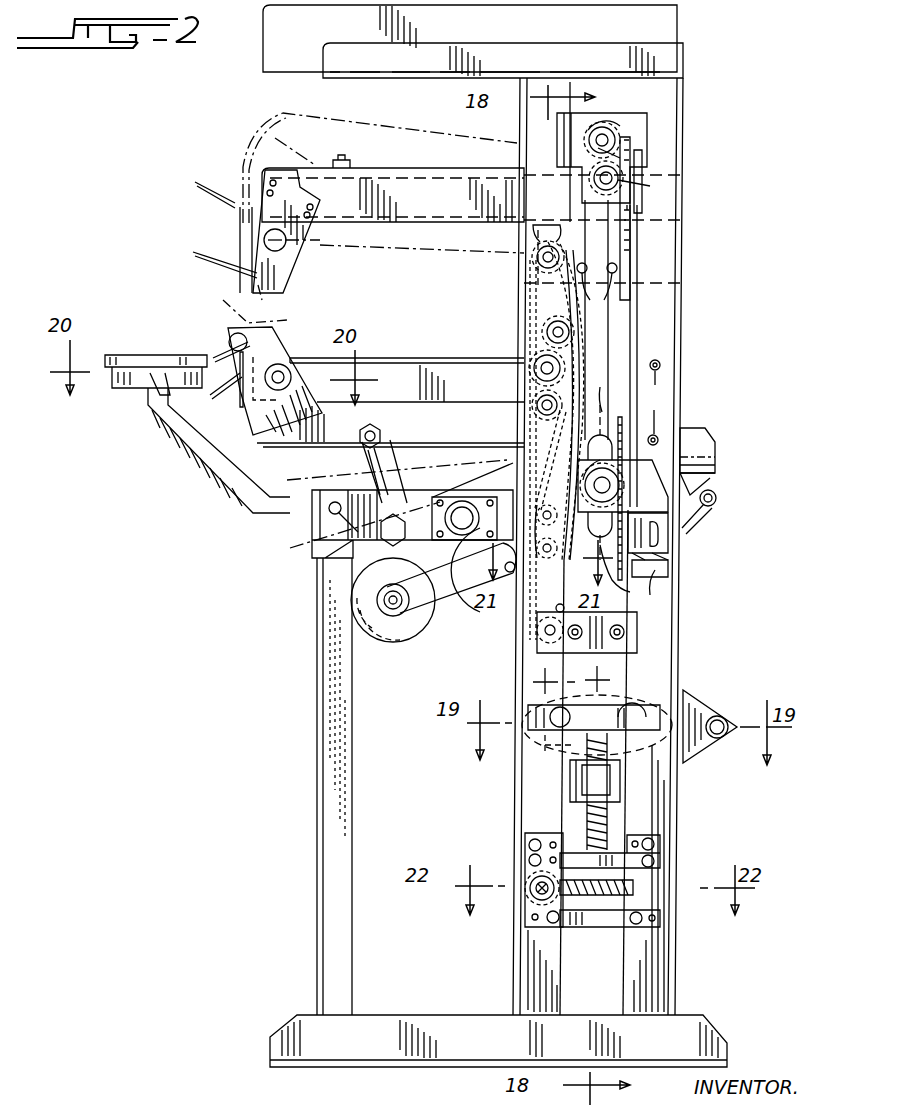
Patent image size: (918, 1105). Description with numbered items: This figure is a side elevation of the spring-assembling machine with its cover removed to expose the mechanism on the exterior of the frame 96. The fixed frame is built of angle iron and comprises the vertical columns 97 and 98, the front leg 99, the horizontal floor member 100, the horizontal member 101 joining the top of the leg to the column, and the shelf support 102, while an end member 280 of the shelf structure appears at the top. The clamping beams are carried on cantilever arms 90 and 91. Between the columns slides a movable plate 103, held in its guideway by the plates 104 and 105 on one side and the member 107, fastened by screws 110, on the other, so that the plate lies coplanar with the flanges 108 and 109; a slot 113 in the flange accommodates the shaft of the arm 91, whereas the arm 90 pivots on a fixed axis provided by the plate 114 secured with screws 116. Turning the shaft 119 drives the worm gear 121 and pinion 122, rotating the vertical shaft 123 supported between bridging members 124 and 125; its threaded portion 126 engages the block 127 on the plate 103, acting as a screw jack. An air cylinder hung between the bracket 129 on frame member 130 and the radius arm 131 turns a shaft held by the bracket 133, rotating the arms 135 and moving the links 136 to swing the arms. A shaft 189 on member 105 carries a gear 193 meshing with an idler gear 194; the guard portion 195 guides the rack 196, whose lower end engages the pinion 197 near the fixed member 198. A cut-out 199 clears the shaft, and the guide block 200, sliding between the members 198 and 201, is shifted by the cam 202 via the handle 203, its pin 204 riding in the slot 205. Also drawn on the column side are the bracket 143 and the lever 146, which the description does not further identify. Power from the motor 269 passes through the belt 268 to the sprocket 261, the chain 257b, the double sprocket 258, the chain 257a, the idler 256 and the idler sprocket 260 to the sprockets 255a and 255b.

The cantilever arm 90 is at (476, 360).
The cantilever arm 91 is at (425, 228).
The frame 96 is at (305, 722).
The vertical column 97 is at (516, 973).
The vertical column 98 is at (676, 1008).
The front leg 99 is at (354, 752).
The horizontal floor member 100 is at (397, 1035).
The horizontal member 101 is at (360, 520).
The shelf support 102 is at (324, 74).
The movable plate 103 is at (610, 668).
The plate 104 is at (630, 622).
The plate 105 is at (640, 128).
The member 107 is at (532, 276).
The flange 108 is at (530, 994).
The flange 109 is at (650, 786).
The screws 110 is at (590, 298).
The slot 113 is at (535, 296).
The plate 114 is at (510, 392).
The screws 116 is at (660, 402).
The shaft 119 is at (535, 900).
The worm gear 121 is at (520, 868).
The pinion 122 is at (636, 888).
The vertical shaft 123 is at (583, 826).
The bridging member 124 is at (655, 858).
The bridging member 125 is at (662, 902).
The threaded portion 126 is at (588, 806).
The block 127 is at (570, 778).
The bracket 129 is at (714, 474).
The frame member 130 is at (710, 436).
The radius arm 131 is at (470, 588).
The bracket 133 is at (472, 495).
The arms 135 is at (410, 552).
The links 136 is at (380, 480).
The pivot bracket 143 is at (700, 706).
The lever 146 is at (615, 706).
The shaft 189 is at (622, 152).
The gear 193 is at (608, 132).
The idler gear 194 is at (614, 181).
The guard portion 195 is at (640, 203).
The rack 196 is at (638, 313).
The pinion 197 is at (690, 515).
The member 198 is at (645, 478).
The cut-out 199 is at (600, 469).
The guide block 200 is at (632, 592).
The member 201 is at (664, 585).
The cam 202 is at (664, 562).
The handle 203 is at (718, 498).
The pin 204 is at (662, 548).
The slot 205 is at (660, 536).
The sprocket 255a is at (535, 265).
The sprocket 255b is at (532, 370).
The idler 256 is at (545, 640).
The chain 257a is at (532, 332).
The chain 257b is at (535, 432).
The double sprocket 258 is at (533, 410).
The idler sprocket 260 is at (565, 340).
The sprocket 261 is at (540, 600).
The belt 268 is at (385, 590).
The motor 269 is at (363, 623).
The end member 280 is at (668, 53).